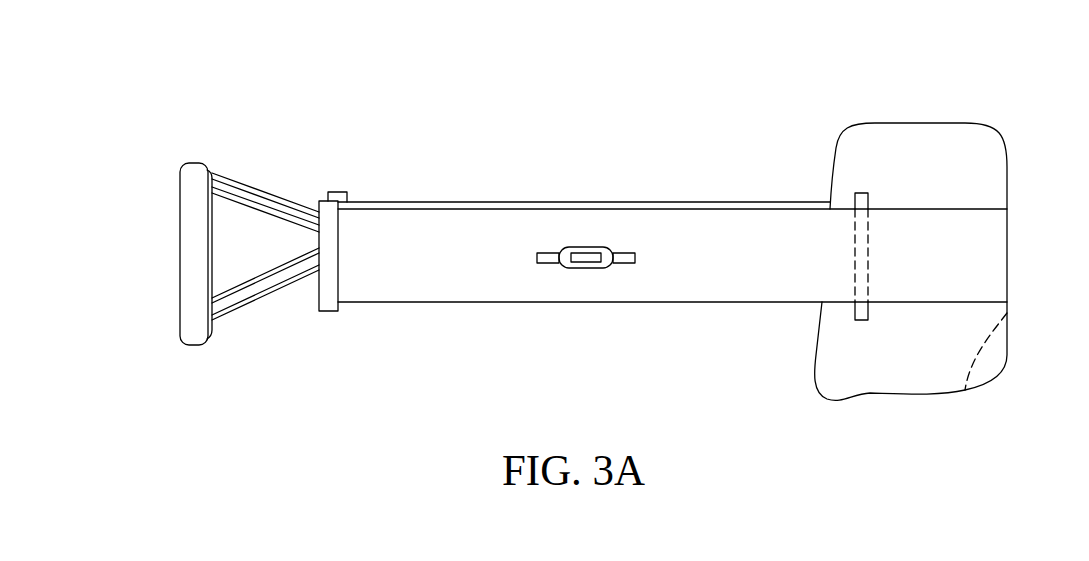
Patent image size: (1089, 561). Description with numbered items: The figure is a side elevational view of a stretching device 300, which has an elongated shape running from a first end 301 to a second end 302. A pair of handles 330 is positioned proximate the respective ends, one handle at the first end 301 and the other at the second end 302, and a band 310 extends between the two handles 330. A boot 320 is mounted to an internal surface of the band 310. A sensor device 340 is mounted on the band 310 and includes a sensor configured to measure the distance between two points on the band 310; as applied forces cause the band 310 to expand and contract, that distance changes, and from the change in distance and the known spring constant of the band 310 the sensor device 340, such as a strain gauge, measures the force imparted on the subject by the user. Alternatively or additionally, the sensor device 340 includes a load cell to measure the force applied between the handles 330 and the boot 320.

The stretching device 300 is at (547, 298).
The first end 301 is at (213, 168).
The second end 302 is at (190, 327).
The band 310 is at (473, 217).
The boot 320 is at (938, 135).
The handles 330 is at (192, 168).
The sensor device 340 is at (560, 259).